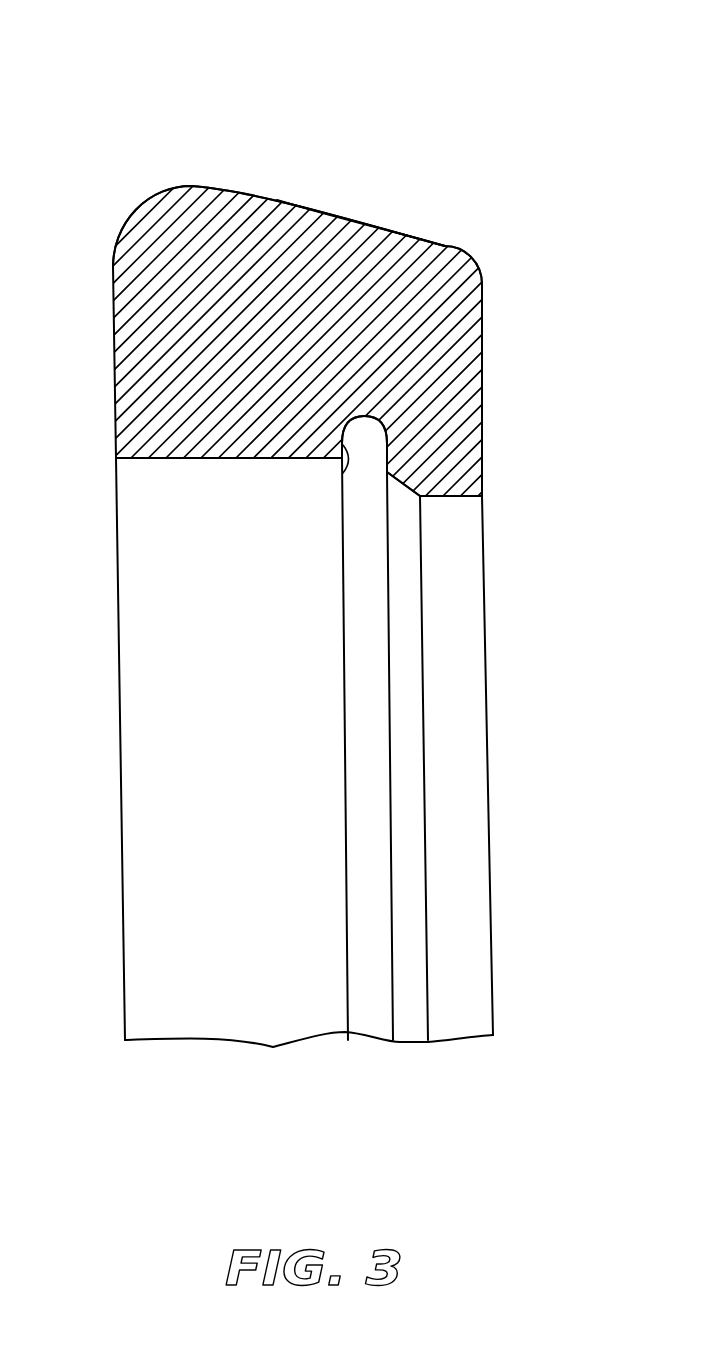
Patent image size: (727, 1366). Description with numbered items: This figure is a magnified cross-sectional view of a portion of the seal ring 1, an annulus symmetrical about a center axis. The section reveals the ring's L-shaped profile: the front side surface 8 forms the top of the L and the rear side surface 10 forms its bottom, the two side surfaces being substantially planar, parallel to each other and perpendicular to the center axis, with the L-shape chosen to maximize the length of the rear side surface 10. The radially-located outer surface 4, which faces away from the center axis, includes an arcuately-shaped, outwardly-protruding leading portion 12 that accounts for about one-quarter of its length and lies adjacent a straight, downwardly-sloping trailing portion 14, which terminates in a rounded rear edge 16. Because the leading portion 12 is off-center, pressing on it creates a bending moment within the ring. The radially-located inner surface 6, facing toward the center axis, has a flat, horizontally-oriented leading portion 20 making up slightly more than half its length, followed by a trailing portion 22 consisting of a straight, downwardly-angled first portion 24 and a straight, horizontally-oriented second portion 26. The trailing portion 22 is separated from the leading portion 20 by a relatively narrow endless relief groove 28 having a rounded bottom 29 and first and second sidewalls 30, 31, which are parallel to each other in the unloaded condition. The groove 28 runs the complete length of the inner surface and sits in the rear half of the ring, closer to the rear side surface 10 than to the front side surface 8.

The seal ring 1 is at (328, 86).
The outer surface 4 is at (282, 200).
The inner surface 6 is at (217, 462).
The front side surface 8 is at (112, 360).
The rear side surface 10 is at (487, 352).
The leading portion 12 is at (176, 188).
The trailing portion 14 is at (355, 218).
The rear edge 16 is at (473, 258).
The leading portion 20 is at (165, 461).
The trailing portion 22 is at (443, 500).
The first portion 24 is at (397, 493).
The second portion 26 is at (474, 497).
The groove 28 is at (354, 488).
The rounded bottom 29 is at (356, 452).
The first sidewall 30 is at (343, 470).
The second sidewall 31 is at (362, 418).